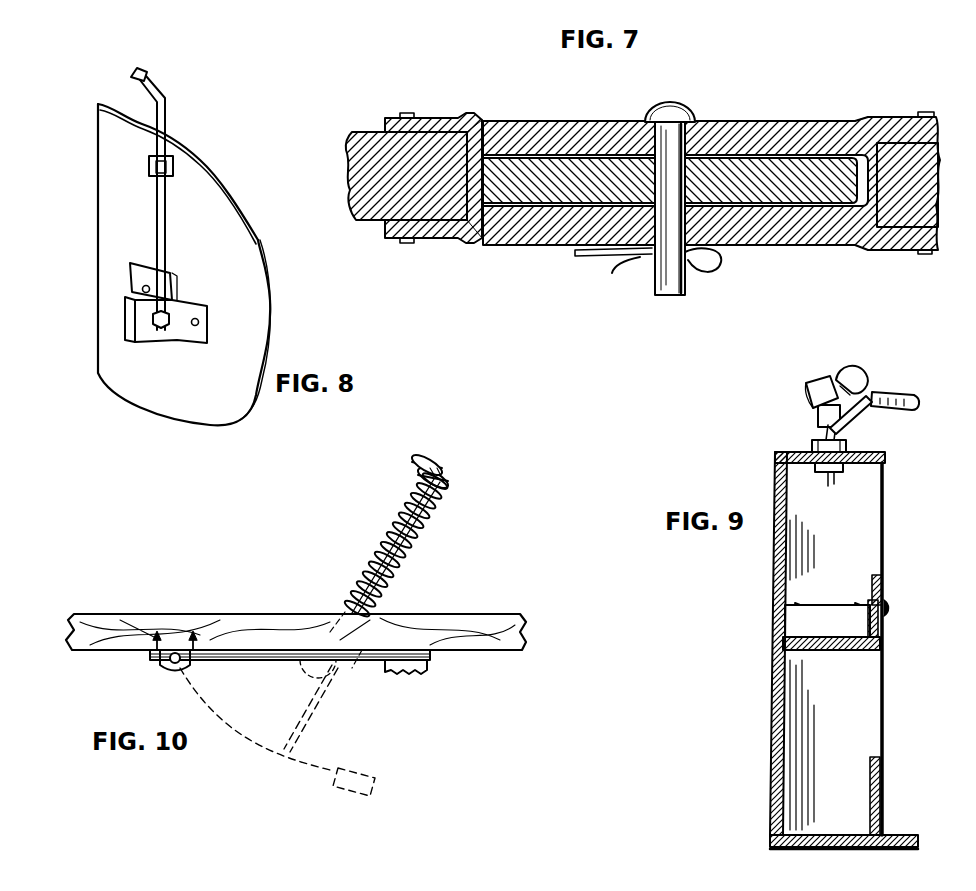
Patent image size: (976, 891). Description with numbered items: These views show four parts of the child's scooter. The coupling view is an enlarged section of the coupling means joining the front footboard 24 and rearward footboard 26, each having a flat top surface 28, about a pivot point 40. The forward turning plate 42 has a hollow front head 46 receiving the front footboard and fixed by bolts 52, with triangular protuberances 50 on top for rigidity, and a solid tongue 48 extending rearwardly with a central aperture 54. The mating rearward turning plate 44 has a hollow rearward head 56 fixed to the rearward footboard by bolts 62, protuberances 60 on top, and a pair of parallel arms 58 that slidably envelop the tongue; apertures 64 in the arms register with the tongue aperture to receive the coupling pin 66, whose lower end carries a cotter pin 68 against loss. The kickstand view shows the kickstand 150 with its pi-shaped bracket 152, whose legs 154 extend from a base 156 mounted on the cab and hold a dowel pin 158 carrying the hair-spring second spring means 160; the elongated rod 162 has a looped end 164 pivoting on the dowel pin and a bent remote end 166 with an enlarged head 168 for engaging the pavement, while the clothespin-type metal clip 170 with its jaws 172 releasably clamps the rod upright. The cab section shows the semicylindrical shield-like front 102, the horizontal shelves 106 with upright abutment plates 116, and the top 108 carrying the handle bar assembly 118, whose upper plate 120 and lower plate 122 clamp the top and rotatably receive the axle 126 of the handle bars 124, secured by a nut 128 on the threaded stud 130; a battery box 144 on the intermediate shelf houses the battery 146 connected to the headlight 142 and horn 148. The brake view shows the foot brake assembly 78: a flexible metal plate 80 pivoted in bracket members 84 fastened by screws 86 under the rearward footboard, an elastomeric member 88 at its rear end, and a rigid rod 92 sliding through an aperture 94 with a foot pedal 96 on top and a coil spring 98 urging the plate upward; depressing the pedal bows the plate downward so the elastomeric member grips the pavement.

In FIG. 7, the front footboard 24 is at (350, 176).
In FIG. 9, the front footboard 24 is at (818, 848).
In FIG. 7, the rearward footboard 26 is at (878, 184).
In FIG. 10, the rearward footboard 26 is at (529, 629).
In FIG. 10, the top surface 28 is at (190, 614).
In FIG. 7, the pivot point 40 is at (654, 183).
In FIG. 7, the forward turning plate 42 is at (384, 228).
In FIG. 7, the rearward turning plate 44 is at (608, 118).
In FIG. 7, the front head 46 is at (428, 118).
In FIG. 7, the tongue 48 is at (822, 207).
In FIG. 7, the triangular protuberances 50 is at (470, 116).
In FIG. 7, the bolts 52 is at (408, 243).
In FIG. 7, the aperture 54 is at (689, 186).
In FIG. 7, the rearward head 56 is at (916, 112).
In FIG. 7, the arms 58 is at (744, 121).
In FIG. 7, the protuberances 60 is at (870, 118).
In FIG. 7, the bolts 62 is at (926, 254).
In FIG. 7, the apertures 64 is at (685, 231).
In FIG. 7, the coupling pin 66 is at (668, 295).
In FIG. 7, the cotter pin 68 is at (712, 268).
In FIG. 10, the foot brake assembly 78 is at (373, 520).
In FIG. 10, the flexible metal plate 80 is at (328, 660).
In FIG. 10, the bracket members 84 is at (170, 666).
In FIG. 10, the screws 86 is at (196, 641).
In FIG. 10, the elastomeric member 88 is at (416, 672).
In FIG. 10, the rigid rod 92 is at (426, 546).
In FIG. 10, the aperture 94 is at (398, 632).
In FIG. 10, the foot pedal 96 is at (452, 476).
In FIG. 10, the coil spring 98 is at (368, 569).
In FIG. 9, the shield-like front 102 is at (772, 746).
In FIG. 9, the shelves 106 is at (840, 650).
In FIG. 9, the top 108 is at (868, 456).
In FIG. 9, the abutment plate 116 is at (882, 591).
In FIG. 9, the handle bar assembly 118 is at (867, 389).
In FIG. 9, the upper plate 120 is at (816, 447).
In FIG. 9, the lower plate 122 is at (822, 471).
In FIG. 9, the handle bars 124 is at (856, 417).
In FIG. 9, the axle 126 is at (878, 463).
In FIG. 9, the nut 128 is at (843, 472).
In FIG. 9, the threaded stud 130 is at (828, 480).
In FIG. 9, the headlight 142 is at (810, 396).
In FIG. 9, the battery box 144 is at (789, 606).
In FIG. 9, the battery 146 is at (848, 612).
In FIG. 9, the horn 148 is at (870, 358).
In FIG. 8, the kickstand 150 is at (154, 231).
In FIG. 8, the bracket 152 is at (199, 297).
In FIG. 8, the legs 154 is at (127, 342).
In FIG. 8, the base 156 is at (209, 320).
In FIG. 8, the dowel pin 158 is at (148, 335).
In FIG. 8, the second spring means 160 is at (173, 277).
In FIG. 8, the elongated rod 162 is at (167, 223).
In FIG. 8, the end 164 is at (130, 297).
In FIG. 8, the remote end 166 is at (160, 92).
In FIG. 8, the head 168 is at (138, 70).
In FIG. 8, the metal clip 170 is at (200, 160).
In FIG. 8, the jaws 172 is at (148, 167).